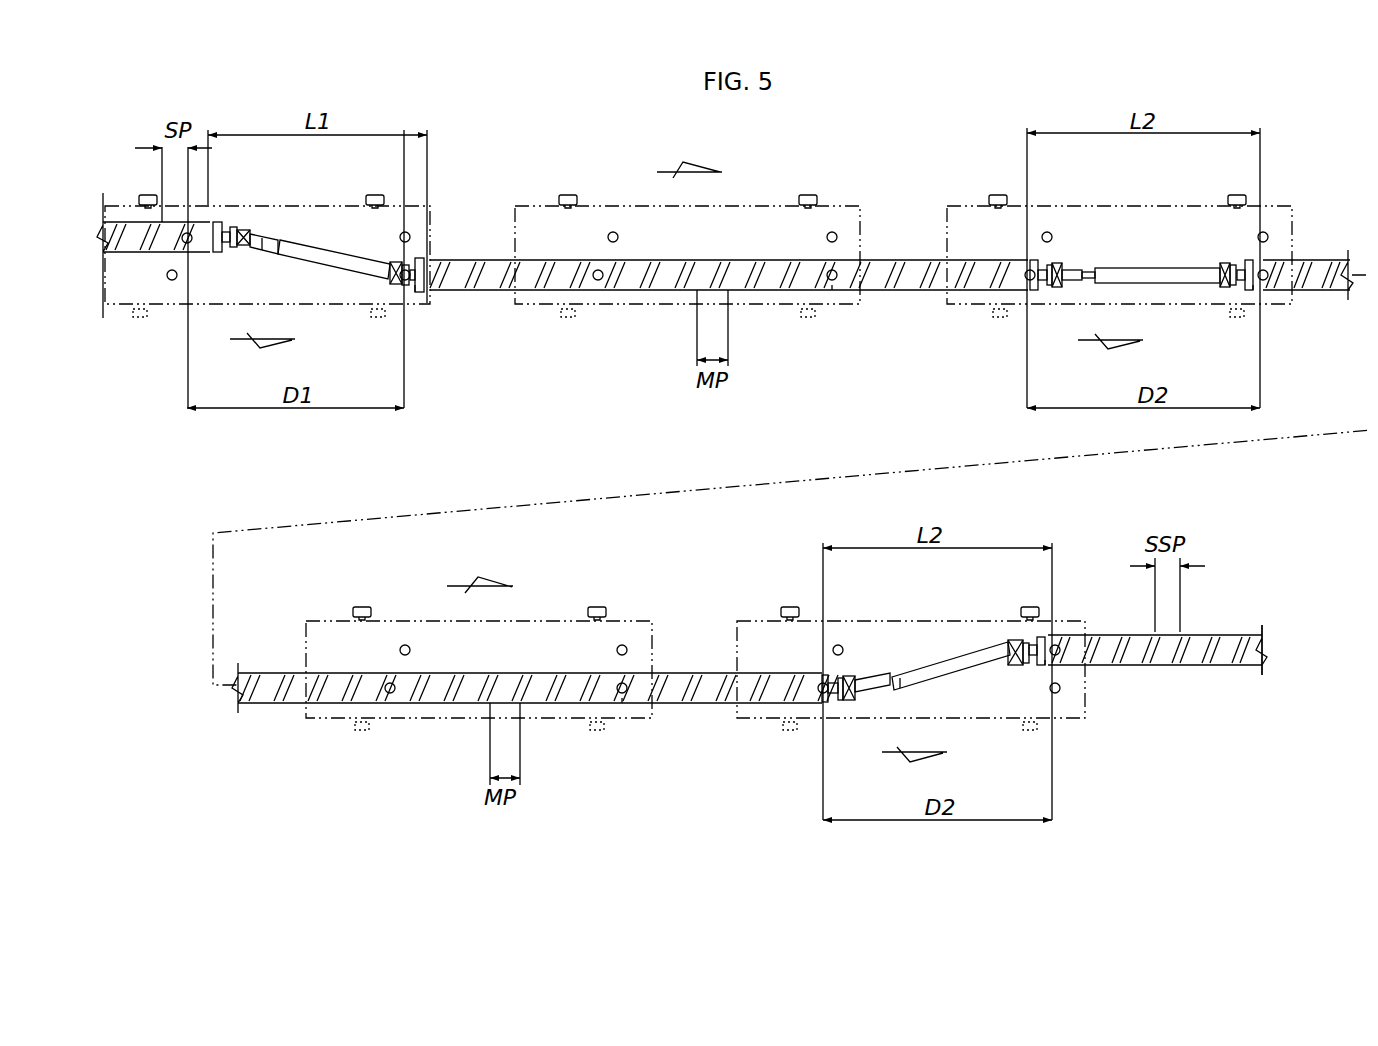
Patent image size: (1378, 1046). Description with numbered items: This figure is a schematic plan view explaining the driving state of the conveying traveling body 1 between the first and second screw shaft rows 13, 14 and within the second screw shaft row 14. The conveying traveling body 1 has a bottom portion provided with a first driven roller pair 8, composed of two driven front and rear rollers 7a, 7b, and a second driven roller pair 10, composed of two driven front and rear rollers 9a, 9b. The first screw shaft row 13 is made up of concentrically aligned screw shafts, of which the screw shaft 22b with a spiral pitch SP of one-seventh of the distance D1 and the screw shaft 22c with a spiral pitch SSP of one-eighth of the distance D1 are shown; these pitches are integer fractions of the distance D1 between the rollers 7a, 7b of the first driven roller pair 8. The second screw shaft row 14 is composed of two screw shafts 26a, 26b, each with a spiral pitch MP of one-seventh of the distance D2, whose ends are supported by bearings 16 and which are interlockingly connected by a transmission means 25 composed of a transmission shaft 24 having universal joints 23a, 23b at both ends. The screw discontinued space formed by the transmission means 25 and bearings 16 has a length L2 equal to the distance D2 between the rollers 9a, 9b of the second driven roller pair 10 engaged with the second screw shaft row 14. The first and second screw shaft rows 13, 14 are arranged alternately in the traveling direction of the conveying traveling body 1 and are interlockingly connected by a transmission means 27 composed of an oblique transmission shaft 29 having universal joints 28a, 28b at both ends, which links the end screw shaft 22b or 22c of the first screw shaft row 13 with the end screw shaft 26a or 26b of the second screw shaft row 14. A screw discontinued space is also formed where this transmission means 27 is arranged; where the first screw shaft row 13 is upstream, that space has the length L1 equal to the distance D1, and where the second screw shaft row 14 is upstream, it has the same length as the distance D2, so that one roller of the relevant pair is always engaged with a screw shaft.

The conveying traveling body 1 is at (345, 306).
The driven front roller 7a is at (410, 236).
The driven rear roller 7b is at (190, 233).
The first driven roller pair 8 is at (405, 225).
The driven front roller 9a is at (410, 278).
The driven rear roller 9b is at (172, 281).
The second driven roller pair 10 is at (415, 288).
The first screw shaft row 13 is at (125, 256).
The second screw shaft row 14 is at (893, 258).
The bearing 16 is at (220, 225).
The screw shaft 22b is at (125, 222).
The screw shaft 22c is at (1218, 635).
The universal joint 23a is at (1056, 288).
The universal joint 23b is at (1225, 288).
The transmission shaft 24 is at (1135, 268).
The transmission means 25 is at (1162, 267).
The screw shaft 26a is at (722, 260).
The screw shaft 26b is at (333, 703).
The transmission means 27 is at (322, 242).
The universal joint 28a is at (242, 248).
The universal joint 28b is at (397, 265).
The oblique transmission shaft 29 is at (322, 262).